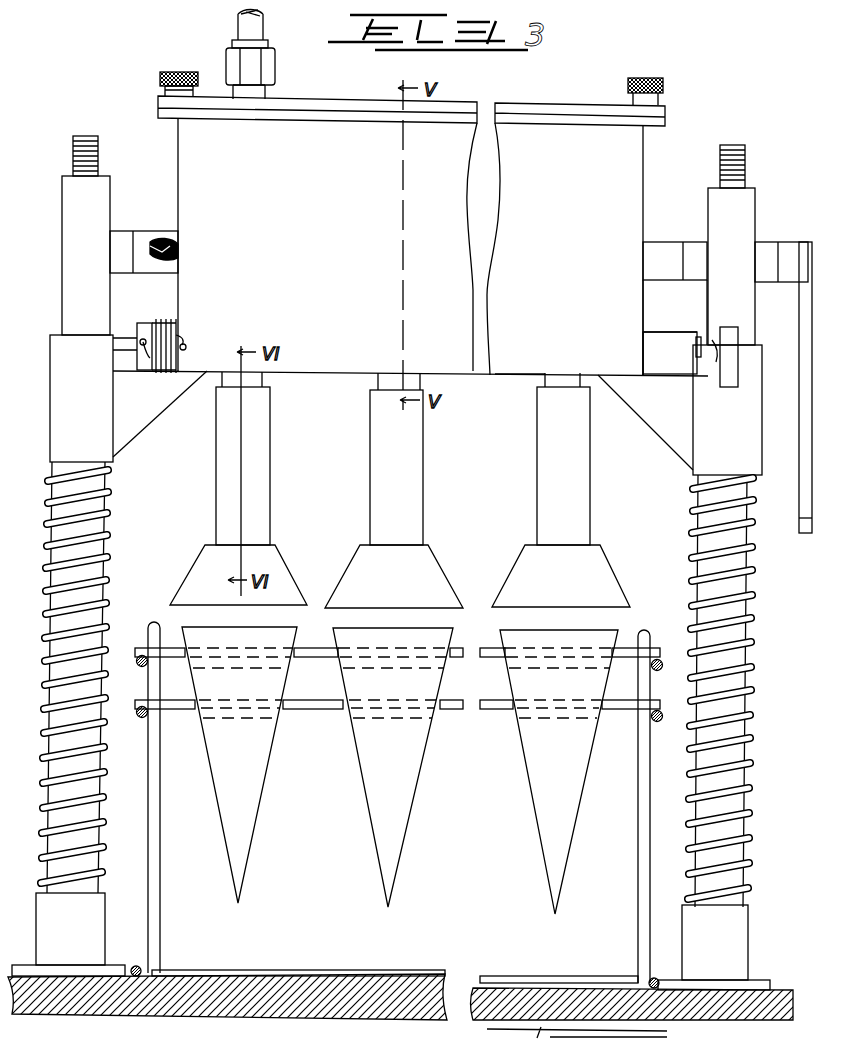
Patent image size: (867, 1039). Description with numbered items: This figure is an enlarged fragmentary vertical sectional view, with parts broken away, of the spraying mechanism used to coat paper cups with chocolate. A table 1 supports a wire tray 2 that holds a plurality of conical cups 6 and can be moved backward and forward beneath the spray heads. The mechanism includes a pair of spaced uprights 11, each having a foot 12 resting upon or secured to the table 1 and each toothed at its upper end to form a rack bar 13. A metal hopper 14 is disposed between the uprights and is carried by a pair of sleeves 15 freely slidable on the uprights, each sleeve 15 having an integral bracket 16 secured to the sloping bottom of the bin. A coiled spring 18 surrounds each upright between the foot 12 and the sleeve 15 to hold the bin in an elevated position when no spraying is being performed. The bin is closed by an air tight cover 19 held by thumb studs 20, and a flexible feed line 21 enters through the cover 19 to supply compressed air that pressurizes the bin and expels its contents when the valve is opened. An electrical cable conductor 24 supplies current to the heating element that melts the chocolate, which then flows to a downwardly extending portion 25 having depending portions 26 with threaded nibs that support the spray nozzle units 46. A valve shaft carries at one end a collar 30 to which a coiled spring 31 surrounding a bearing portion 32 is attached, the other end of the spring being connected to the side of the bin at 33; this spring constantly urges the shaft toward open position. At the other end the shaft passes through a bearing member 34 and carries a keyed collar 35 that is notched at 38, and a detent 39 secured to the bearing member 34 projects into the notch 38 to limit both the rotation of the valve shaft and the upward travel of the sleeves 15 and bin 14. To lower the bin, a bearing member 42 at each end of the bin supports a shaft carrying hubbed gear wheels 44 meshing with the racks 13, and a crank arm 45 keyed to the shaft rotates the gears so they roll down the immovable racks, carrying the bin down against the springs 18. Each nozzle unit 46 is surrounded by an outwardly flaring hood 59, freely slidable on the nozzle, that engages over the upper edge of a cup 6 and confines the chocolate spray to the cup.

The table 1 is at (378, 1000).
The tray 2 is at (166, 841).
The cup 6 is at (362, 770).
The upright 11 is at (66, 625).
The foot 12 is at (92, 926).
The rack bar 13 is at (82, 240).
The hopper 14 is at (546, 235).
The sleeve 15 is at (66, 410).
The bracket 16 is at (158, 400).
The coiled spring 18 is at (102, 582).
The cover 19 is at (543, 115).
The thumb stud 20 is at (655, 82).
The flexible feed line 21 is at (257, 34).
The electrical cable conductor 24 is at (170, 246).
The downwardly extending portion 25 is at (516, 368).
The portions 26 is at (376, 384).
The collar 30 is at (146, 330).
The coiled spring 31 is at (172, 328).
The bearing portion 32 is at (176, 362).
The spring connection 33 is at (186, 345).
The bearing member 34 is at (660, 348).
The collar 35 is at (714, 348).
The notch 38 is at (698, 338).
The detent 39 is at (698, 352).
The bearing member 42 is at (143, 242).
The hubbed gear wheel 44 is at (98, 137).
The crank arm 45 is at (802, 326).
The spray nozzle unit 46 is at (392, 486).
The hood 59 is at (528, 576).